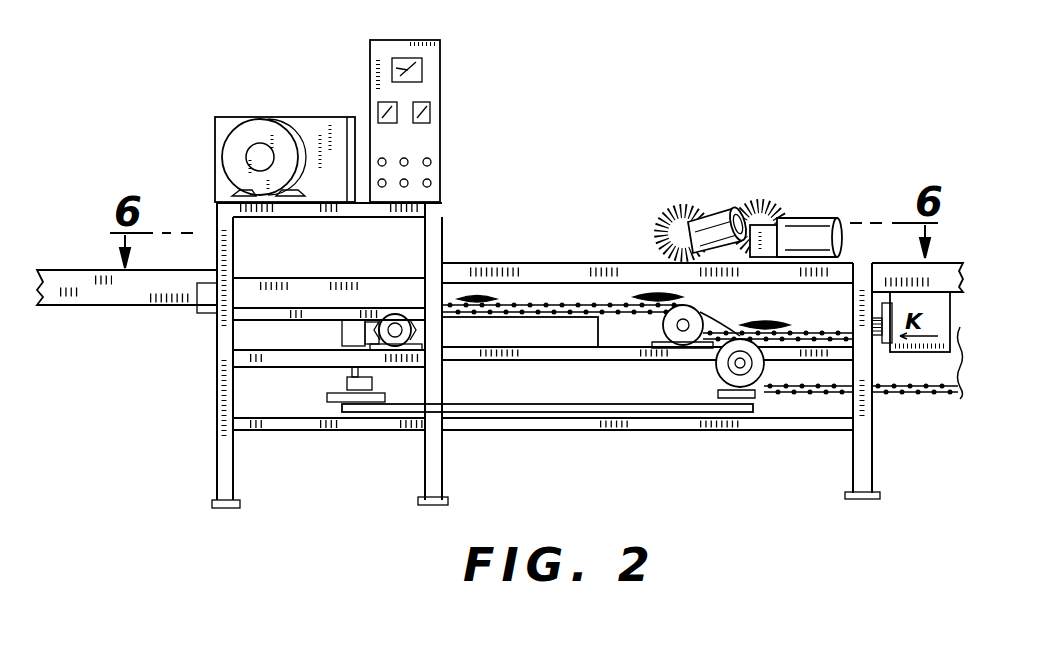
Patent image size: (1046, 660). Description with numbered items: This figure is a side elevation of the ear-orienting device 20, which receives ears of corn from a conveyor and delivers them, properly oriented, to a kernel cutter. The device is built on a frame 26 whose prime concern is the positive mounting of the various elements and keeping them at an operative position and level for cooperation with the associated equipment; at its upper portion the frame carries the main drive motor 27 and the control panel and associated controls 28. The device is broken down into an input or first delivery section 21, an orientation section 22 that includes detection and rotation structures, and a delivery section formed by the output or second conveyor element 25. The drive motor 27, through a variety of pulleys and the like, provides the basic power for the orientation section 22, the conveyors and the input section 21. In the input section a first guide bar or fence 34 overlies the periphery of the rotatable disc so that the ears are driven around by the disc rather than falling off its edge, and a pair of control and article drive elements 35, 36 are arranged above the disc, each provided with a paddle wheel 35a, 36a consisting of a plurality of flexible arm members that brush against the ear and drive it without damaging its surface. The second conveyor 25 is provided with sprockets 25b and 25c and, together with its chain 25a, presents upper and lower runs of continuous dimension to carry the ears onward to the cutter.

The device 20 is at (205, 113).
The input or first delivery section 21 is at (805, 170).
The orientation section 22 is at (446, 192).
The conveyor element 25 is at (627, 313).
The conveyor chain 25a is at (804, 330).
The sprocket 25b is at (683, 330).
The sprocket 25c is at (395, 328).
The frame 26 is at (205, 368).
The main drive motor 27 is at (242, 120).
The control panel and associated controls 28 is at (445, 84).
The first guide bar or fence 34 is at (532, 407).
The control and article drive element 35 is at (806, 222).
The paddle wheel 35a is at (763, 205).
The control and article drive element 36 is at (730, 210).
The paddle wheel 36a is at (688, 212).